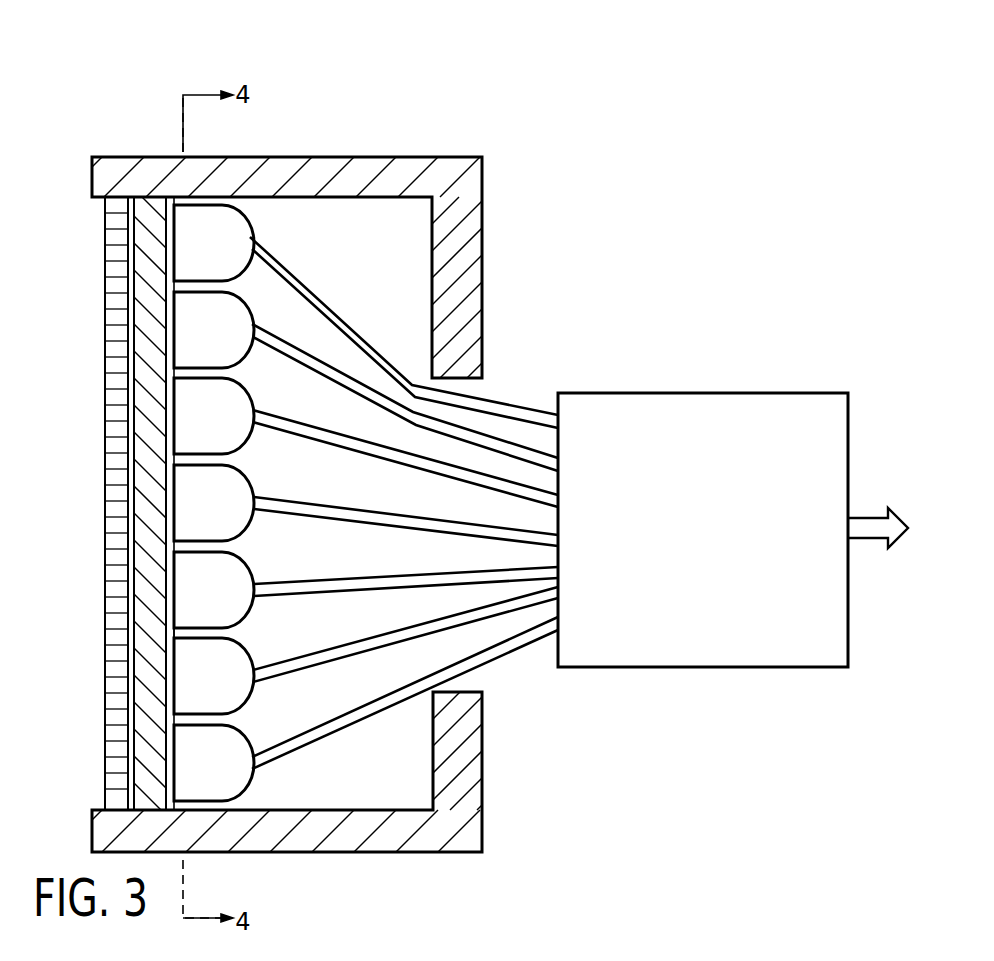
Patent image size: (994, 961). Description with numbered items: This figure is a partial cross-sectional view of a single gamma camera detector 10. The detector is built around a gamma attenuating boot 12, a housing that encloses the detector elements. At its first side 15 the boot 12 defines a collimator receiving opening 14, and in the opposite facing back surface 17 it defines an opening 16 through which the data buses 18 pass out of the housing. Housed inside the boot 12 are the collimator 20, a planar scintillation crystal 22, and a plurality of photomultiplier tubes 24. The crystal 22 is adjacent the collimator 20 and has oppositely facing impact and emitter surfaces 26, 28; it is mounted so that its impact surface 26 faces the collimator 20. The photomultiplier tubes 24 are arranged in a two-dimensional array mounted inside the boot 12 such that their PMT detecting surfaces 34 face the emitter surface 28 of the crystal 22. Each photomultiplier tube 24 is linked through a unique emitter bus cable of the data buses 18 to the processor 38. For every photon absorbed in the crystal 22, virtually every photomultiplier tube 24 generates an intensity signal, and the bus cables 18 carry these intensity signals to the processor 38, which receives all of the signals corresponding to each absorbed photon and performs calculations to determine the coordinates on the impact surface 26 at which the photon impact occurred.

The gamma camera detector 10 is at (289, 76).
The gamma attenuating boot 12 is at (457, 284).
The collimator receiving opening 14 is at (98, 200).
The first side 15 is at (92, 821).
The opening 16 is at (465, 693).
The back surface 17 is at (483, 258).
The data buses 18 is at (487, 440).
The collimator 20 is at (105, 272).
The scintillation crystal 22 is at (158, 225).
The photomultiplier tubes 24 is at (246, 731).
The impact surface 26 is at (130, 303).
The emitter surface 28 is at (168, 250).
The PMT detecting surfaces 34 is at (172, 605).
The processor 38 is at (702, 668).